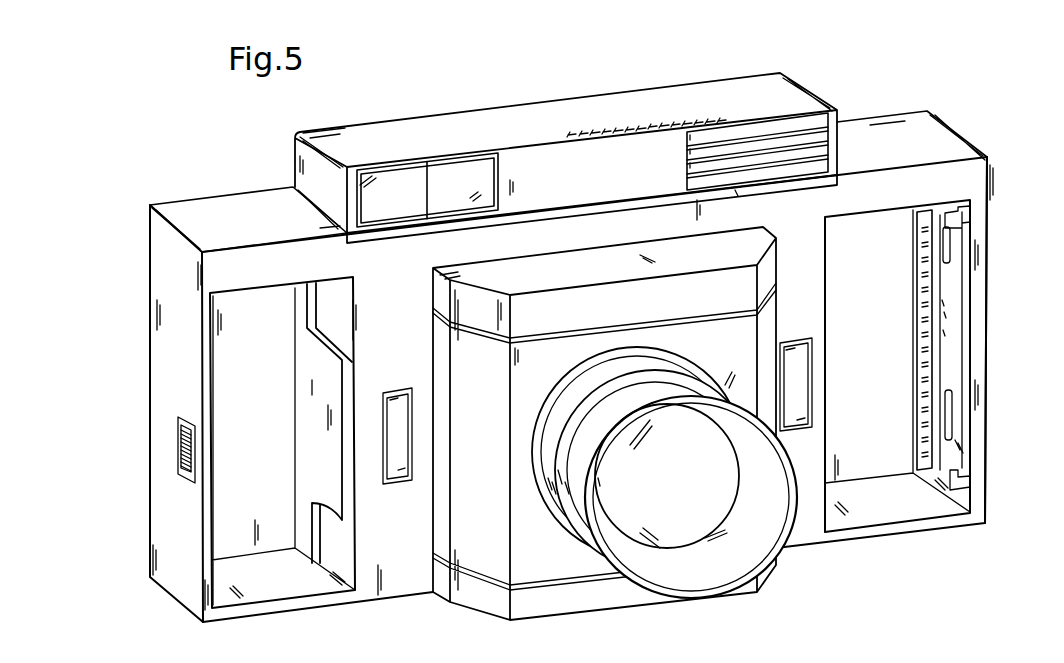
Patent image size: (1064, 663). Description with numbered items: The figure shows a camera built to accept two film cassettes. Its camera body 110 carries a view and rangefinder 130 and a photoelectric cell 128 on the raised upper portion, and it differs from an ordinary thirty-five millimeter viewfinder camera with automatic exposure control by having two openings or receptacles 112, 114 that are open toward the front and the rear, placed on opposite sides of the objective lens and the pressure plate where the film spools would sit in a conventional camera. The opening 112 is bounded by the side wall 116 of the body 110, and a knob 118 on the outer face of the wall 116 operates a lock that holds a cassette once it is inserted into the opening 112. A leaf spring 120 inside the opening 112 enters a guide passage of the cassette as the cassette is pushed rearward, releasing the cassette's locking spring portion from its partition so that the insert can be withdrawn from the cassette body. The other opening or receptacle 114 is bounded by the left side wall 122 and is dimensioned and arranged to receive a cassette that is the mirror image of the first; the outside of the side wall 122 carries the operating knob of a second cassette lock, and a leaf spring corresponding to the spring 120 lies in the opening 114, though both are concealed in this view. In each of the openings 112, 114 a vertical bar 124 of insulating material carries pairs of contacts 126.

The camera body 110 is at (410, 583).
The opening or receptacle 112 is at (230, 514).
The opening or receptacle 114 is at (878, 507).
The side wall 116 is at (167, 292).
The knob 118 is at (178, 450).
The leaf spring 120 is at (307, 418).
The left side wall 122 is at (987, 317).
The vertical bar of insulating material 124 is at (915, 272).
The pairs of contacts 126 is at (922, 328).
The photoelectric cell 128 is at (729, 138).
The view and rangefinder 130 is at (401, 181).